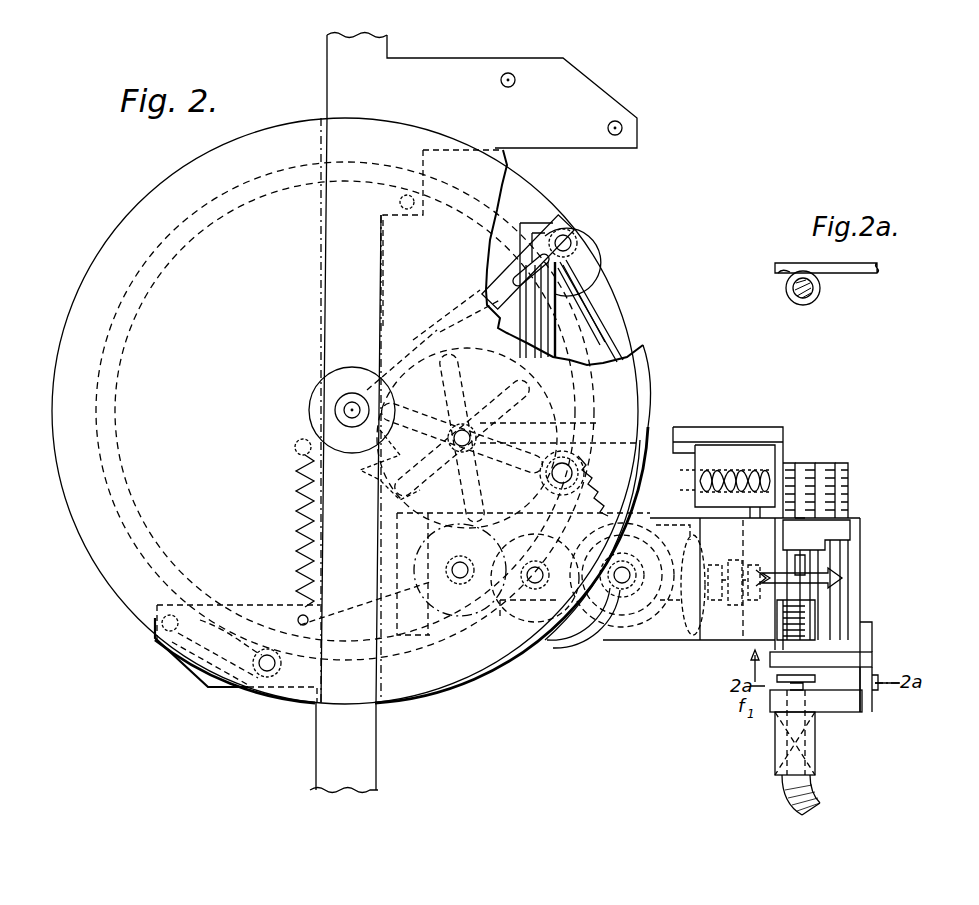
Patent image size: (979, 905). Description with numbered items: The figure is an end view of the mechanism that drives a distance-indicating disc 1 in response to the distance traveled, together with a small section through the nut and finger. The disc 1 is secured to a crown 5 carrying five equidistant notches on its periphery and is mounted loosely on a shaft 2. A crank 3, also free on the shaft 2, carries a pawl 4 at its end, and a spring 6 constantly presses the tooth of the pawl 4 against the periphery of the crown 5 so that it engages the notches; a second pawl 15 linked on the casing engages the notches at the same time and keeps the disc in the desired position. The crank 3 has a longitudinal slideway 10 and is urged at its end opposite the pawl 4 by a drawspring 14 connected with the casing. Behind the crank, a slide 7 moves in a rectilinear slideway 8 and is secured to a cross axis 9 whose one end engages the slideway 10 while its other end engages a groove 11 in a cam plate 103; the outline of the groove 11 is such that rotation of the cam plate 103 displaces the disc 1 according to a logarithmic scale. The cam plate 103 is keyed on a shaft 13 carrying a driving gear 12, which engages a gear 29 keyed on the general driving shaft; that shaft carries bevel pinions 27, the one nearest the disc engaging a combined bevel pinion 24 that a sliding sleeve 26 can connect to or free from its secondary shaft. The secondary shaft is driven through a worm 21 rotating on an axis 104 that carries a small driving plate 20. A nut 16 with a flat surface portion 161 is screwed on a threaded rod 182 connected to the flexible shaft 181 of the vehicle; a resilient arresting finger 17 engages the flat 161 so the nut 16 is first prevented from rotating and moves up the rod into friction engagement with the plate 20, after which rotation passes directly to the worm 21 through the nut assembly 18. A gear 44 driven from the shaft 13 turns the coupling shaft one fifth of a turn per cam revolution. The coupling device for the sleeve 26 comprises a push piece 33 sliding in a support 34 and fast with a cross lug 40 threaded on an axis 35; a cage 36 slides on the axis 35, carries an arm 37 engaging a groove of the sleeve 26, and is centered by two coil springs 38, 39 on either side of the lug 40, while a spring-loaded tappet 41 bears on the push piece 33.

In FIG. 2, the disc 1 is at (168, 197).
In FIG. 2, the crown 5 is at (142, 273).
In FIG. 2, the shaft 2 is at (340, 405).
In FIG. 2, the crank 3 is at (487, 290).
In FIG. 2, the pawl 4 is at (590, 255).
In FIG. 2, the spring 6 is at (567, 215).
In FIG. 2, the slide 7 is at (546, 303).
In FIG. 2, the rectilinear slideway 8 is at (553, 345).
In FIG. 2, the cross axis 9 is at (572, 265).
In FIG. 2, the longitudinal slideway 10 is at (515, 278).
In FIG. 2, the groove 11 is at (537, 332).
In FIG. 2, the driving gear 12 is at (527, 643).
In FIG. 2, the shaft 13 is at (548, 650).
In FIG. 2, the drawspring 14 is at (300, 527).
In FIG. 2, the second pawl 15 is at (250, 690).
In FIG. 2, the nut 16 is at (813, 607).
In FIG. 2A, the nut 16 is at (813, 302).
In FIG. 2, the flat surface portion 161 is at (835, 628).
In FIG. 2A, the flat surface portion 161 is at (787, 273).
In FIG. 2, the resilient arresting finger 17 is at (866, 660).
In FIG. 2A, the resilient arresting finger 17 is at (836, 253).
In FIG. 2, the suction nozzle 18 is at (817, 750).
In FIG. 2, the flexible shaft 181 is at (815, 797).
In FIG. 2, the threaded rod 182 is at (805, 690).
In FIG. 2A, the threaded rod 182 is at (817, 288).
In FIG. 2, the small driving plate 20 is at (778, 607).
In FIG. 2, the worm 21 is at (845, 578).
In FIG. 2, the combined bevel pinion 24 is at (690, 640).
In FIG. 2, the sleeve 26 is at (720, 640).
In FIG. 2, the bevel pinion 27 is at (655, 625).
In FIG. 2, the gear 29 is at (455, 647).
In FIG. 2, the push piece 33 is at (703, 450).
In FIG. 2, the support 34 is at (785, 440).
In FIG. 2, the axis 35 is at (747, 507).
In FIG. 2, the cage 36 is at (807, 490).
In FIG. 2, the arm 37 is at (750, 537).
In FIG. 2, the coil spring 38 is at (745, 465).
In FIG. 2, the coil spring 39 is at (713, 467).
In FIG. 2, the cross lug 40 is at (740, 470).
In FIG. 2, the tappet 41 is at (568, 448).
In FIG. 2, the gear 44 is at (378, 477).
In FIG. 2, the cam plate 103 is at (570, 638).
In FIG. 2, the axis 104 is at (800, 558).